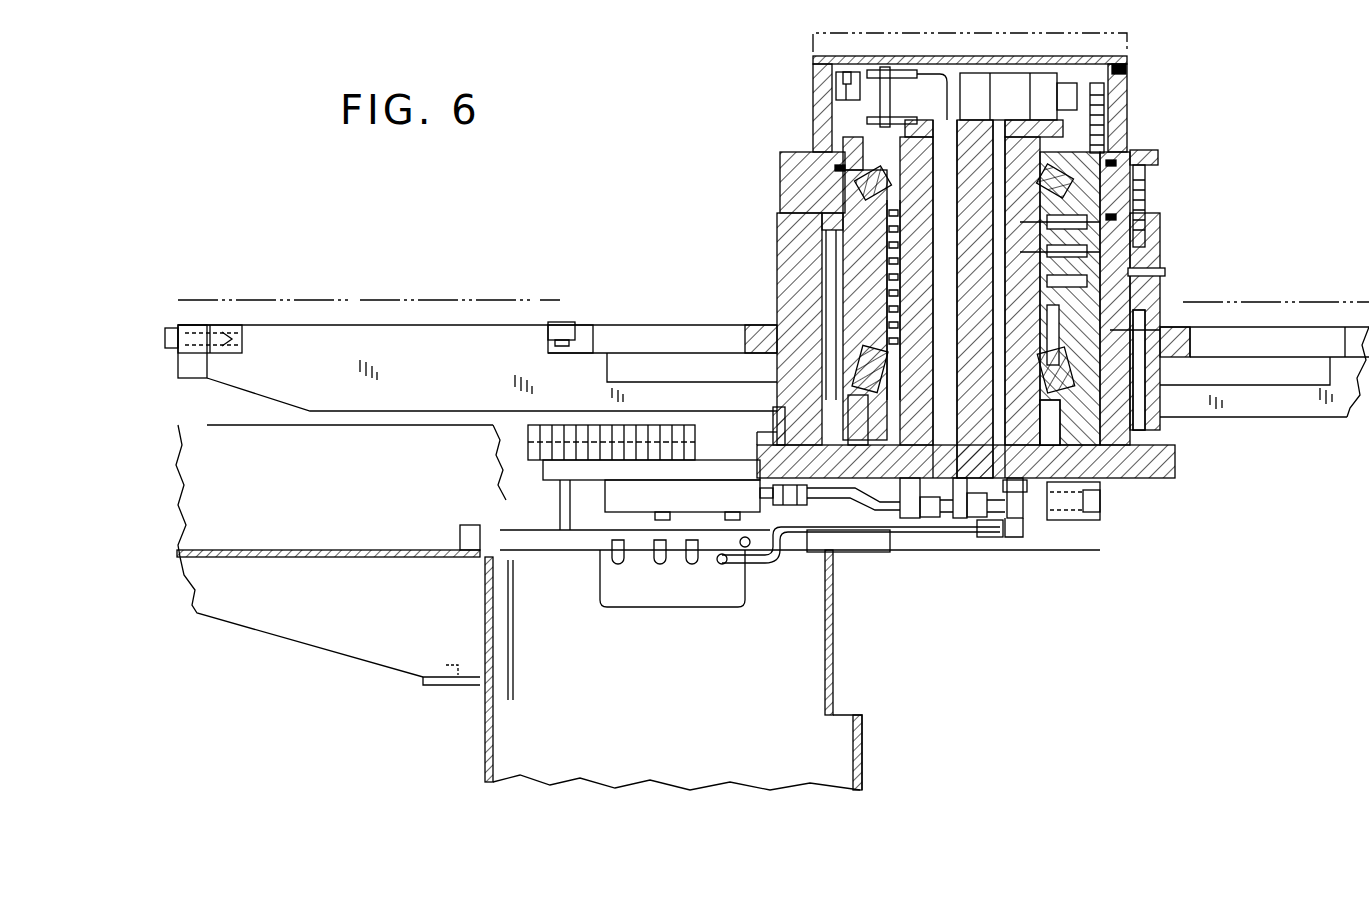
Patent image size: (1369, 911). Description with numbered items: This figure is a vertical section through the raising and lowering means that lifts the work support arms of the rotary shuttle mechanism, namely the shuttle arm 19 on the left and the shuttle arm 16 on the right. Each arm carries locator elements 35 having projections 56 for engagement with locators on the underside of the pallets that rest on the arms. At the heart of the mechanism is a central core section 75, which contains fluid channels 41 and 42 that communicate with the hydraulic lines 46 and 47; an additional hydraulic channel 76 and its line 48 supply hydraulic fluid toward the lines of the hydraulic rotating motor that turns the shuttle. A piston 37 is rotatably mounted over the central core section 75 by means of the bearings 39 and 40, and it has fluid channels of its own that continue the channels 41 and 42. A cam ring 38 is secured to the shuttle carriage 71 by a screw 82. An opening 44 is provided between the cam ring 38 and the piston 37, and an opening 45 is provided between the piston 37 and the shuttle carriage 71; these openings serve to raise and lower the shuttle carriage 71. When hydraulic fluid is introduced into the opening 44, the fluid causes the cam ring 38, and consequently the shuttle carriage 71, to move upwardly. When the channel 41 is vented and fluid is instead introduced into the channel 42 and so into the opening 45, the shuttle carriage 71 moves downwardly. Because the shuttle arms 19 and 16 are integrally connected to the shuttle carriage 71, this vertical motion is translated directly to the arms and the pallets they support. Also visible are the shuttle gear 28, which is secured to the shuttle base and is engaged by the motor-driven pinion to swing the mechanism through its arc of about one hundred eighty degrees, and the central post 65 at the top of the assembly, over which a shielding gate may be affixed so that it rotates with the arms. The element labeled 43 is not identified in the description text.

The shuttle arm 16 is at (1337, 303).
The shuttle arm 19 is at (427, 333).
The shuttle gear 28 is at (528, 440).
The locator element 35 is at (200, 366).
The piston 37 is at (832, 262).
The cam ring 38 is at (796, 178).
The bearing 39 is at (1060, 182).
The bearing 40 is at (858, 371).
The fluid channel 41 is at (1012, 254).
The fluid channel 42 is at (1010, 343).
The bolt 43 is at (1113, 227).
The opening 44 is at (1153, 227).
The opening 45 is at (1113, 333).
The hydraulic line 46 is at (1013, 532).
The hydraulic line 47 is at (975, 510).
The hydraulic line 48 is at (915, 510).
The projection 56 is at (192, 325).
The central post 65 is at (1118, 94).
The shuttle carriage 71 is at (1152, 267).
The central core section 75 is at (980, 148).
The hydraulic channel 76 is at (900, 310).
The screw 82 is at (1160, 150).